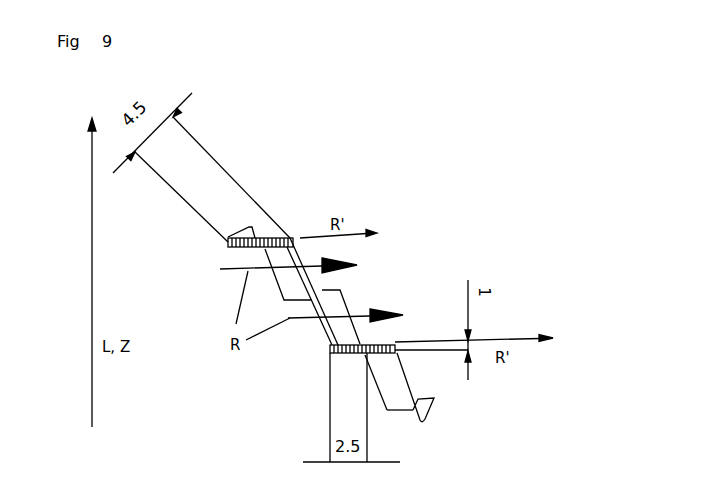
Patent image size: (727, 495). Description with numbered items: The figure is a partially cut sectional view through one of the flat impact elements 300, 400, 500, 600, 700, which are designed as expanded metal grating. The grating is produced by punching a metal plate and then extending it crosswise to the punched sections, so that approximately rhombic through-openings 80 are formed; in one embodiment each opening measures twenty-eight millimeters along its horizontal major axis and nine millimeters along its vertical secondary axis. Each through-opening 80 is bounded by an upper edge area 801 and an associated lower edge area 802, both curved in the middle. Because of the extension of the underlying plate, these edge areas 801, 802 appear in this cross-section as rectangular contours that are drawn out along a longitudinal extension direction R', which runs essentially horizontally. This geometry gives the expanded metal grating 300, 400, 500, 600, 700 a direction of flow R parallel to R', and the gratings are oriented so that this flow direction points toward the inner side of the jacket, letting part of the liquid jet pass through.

The through-opening 80 is at (322, 284).
The upper edge area 801 is at (280, 252).
The lower edge area 802 is at (338, 330).
The flat impact element 300 is at (339, 269).
The flat impact element 400 is at (284, 269).
The flat impact element 500 is at (284, 269).
The flat impact element 600 is at (284, 269).
The flat impact element 700 is at (284, 269).